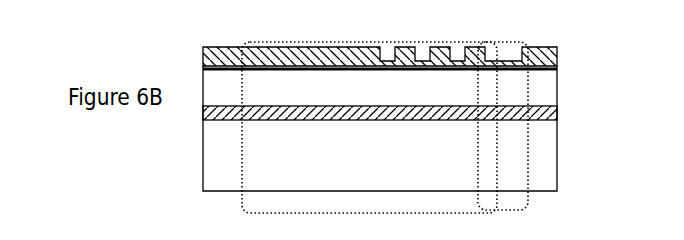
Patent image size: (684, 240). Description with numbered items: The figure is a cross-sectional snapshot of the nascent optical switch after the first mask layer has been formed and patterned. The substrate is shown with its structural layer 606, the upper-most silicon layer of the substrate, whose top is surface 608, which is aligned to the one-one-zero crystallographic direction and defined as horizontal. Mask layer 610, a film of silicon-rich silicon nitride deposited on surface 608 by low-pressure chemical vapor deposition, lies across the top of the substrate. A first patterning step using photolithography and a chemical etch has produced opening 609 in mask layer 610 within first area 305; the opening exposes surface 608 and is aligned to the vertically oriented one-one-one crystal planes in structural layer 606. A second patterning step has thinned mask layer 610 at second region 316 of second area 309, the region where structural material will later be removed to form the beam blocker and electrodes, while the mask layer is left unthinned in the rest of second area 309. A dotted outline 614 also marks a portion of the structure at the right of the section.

The first area 305 is at (528, 178).
The second area 309 is at (263, 214).
The second region 316 is at (452, 45).
The structural layer 606 is at (557, 92).
The surface 608 is at (512, 70).
The opening 609 is at (503, 58).
The mask layer 610 is at (303, 47).
The second region 614 is at (516, 141).